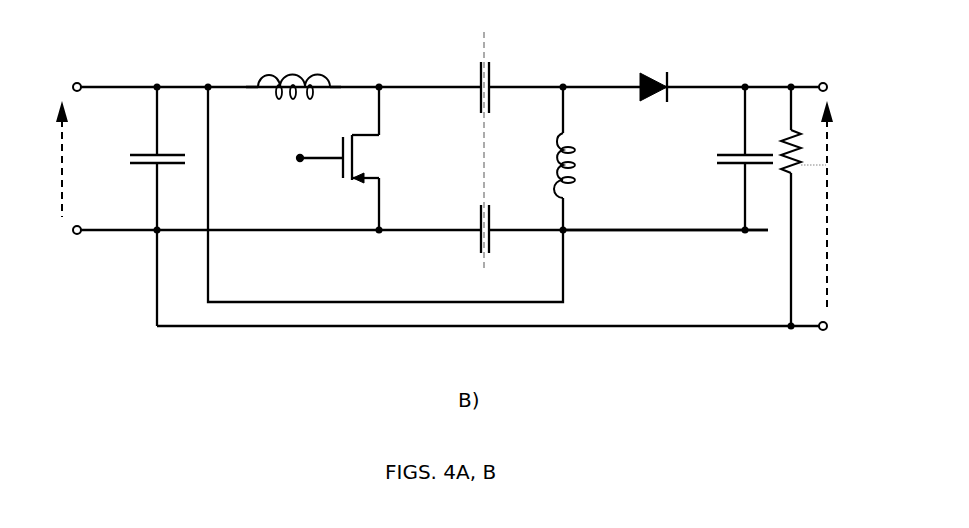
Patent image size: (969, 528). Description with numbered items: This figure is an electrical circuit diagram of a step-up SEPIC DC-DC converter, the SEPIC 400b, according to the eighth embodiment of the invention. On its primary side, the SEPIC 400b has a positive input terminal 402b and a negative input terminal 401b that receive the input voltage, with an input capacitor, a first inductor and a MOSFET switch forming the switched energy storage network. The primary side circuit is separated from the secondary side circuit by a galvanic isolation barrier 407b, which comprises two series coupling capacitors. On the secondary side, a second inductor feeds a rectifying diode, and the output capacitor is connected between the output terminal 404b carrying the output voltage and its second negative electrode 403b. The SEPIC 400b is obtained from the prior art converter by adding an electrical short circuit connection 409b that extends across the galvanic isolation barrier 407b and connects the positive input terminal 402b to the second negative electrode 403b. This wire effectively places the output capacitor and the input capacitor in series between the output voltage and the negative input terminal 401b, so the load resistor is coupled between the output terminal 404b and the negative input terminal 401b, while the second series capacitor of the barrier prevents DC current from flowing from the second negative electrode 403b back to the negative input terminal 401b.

The SEPIC 400b is at (454, 219).
The negative input terminal 401b is at (104, 249).
The positive input terminal 402b is at (108, 68).
The second negative electrode of the output capacitor 403b is at (695, 280).
The output terminal 404b is at (788, 73).
The galvanic isolation barrier 407b is at (516, 139).
The electrical short circuit connection 409b is at (385, 194).